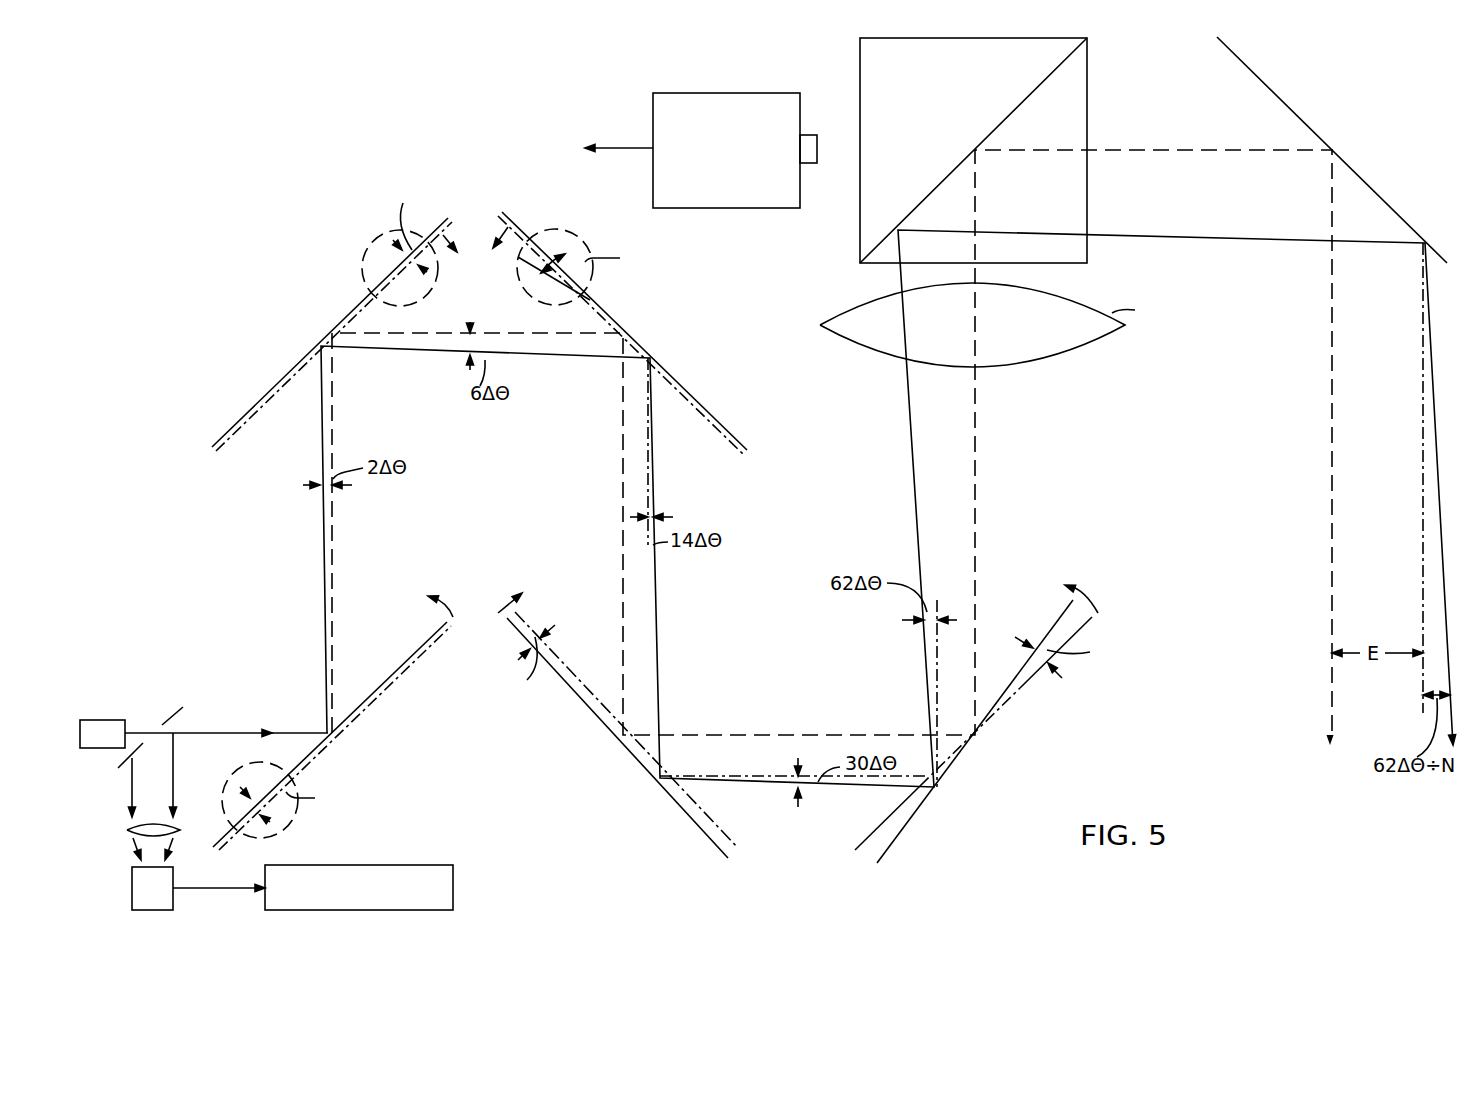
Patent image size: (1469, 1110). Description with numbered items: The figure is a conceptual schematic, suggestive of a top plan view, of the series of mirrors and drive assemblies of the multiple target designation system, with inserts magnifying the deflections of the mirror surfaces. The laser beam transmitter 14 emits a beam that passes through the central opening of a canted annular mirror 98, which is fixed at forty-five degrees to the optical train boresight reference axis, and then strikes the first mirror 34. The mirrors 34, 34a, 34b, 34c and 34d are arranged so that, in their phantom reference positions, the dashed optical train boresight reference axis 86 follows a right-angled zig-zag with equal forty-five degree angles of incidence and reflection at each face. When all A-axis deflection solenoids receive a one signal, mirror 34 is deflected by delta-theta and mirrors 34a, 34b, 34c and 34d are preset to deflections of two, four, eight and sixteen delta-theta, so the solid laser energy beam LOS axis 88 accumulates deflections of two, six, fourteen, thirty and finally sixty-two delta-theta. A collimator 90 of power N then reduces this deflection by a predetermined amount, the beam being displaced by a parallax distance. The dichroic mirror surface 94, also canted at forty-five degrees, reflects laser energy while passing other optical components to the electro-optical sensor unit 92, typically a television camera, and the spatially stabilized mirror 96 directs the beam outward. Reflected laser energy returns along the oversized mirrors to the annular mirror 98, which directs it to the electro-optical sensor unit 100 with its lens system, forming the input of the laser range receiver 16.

The laser beam transmitter 14 is at (96, 733).
The canted annular mirror 98 is at (165, 718).
The electro-optical sensor unit 100 is at (122, 861).
The laser range receiver 16 is at (418, 865).
The mirror 34 is at (417, 652).
The mirror 34a is at (303, 357).
The mirror 34b is at (643, 347).
The mirror 34c is at (700, 827).
The mirror 34d is at (903, 826).
The optical train boresight reference axis 86 is at (253, 738).
The laser energy beam LOS axis 88 is at (318, 415).
The collimator 90 is at (1103, 338).
The electro-optical sensor unit 92 is at (765, 93).
The dichroic mirror surface 94 is at (1033, 92).
The spatially stabilized mirror 96 is at (1240, 60).